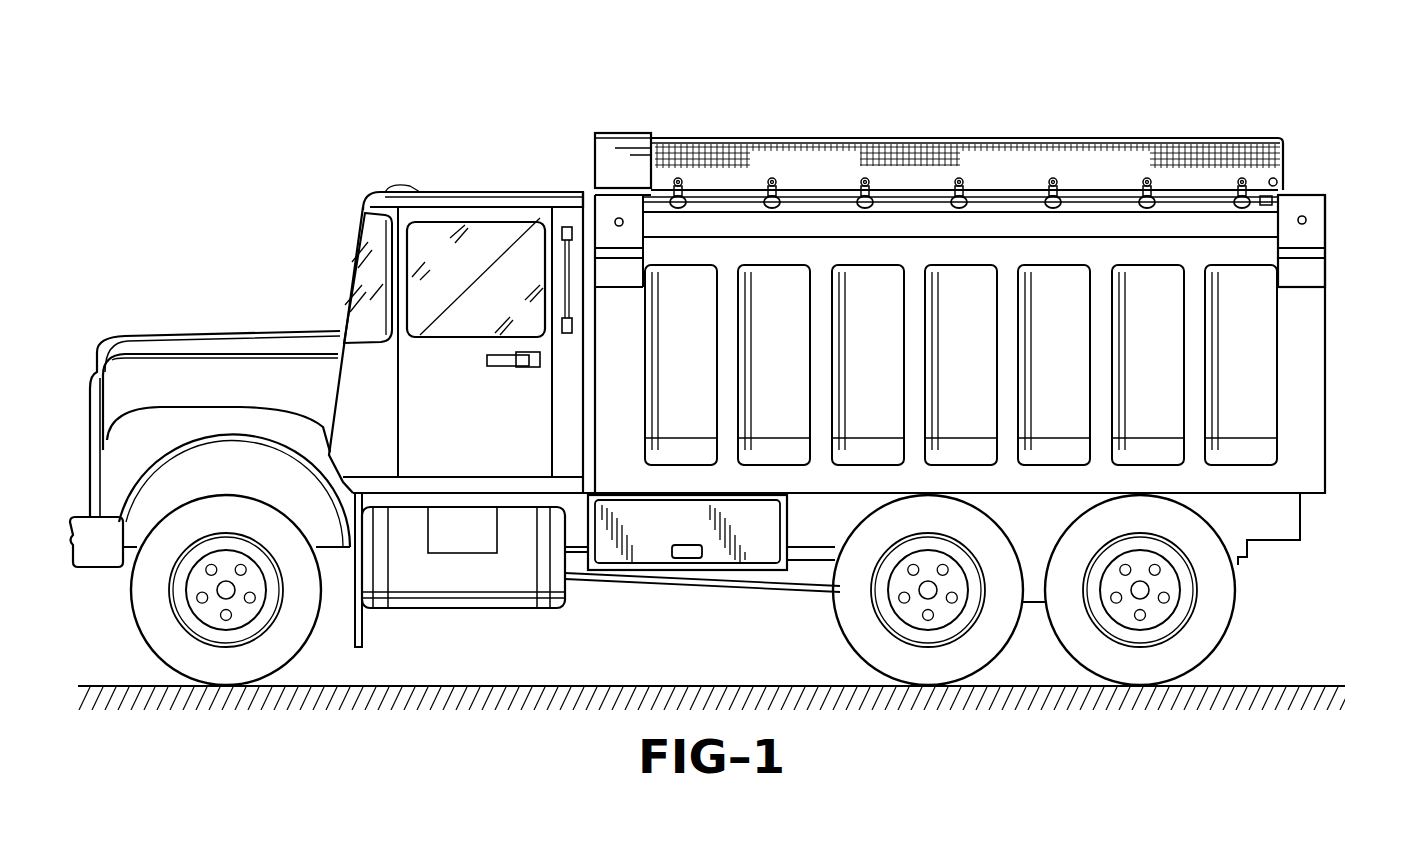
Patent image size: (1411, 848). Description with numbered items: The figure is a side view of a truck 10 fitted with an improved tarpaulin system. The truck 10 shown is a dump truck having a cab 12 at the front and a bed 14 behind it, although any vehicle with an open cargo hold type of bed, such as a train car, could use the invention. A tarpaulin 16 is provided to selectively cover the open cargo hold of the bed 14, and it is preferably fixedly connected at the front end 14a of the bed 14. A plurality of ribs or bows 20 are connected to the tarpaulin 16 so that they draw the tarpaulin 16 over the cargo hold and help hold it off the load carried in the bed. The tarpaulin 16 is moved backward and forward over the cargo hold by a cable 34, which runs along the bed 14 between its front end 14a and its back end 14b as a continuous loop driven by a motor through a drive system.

The truck 10 is at (1143, 72).
The cab 12 is at (471, 184).
The bed 14 is at (1266, 364).
The front end of bed 14a is at (623, 132).
The back end of bed 14b is at (1312, 307).
The tarpaulin 16 is at (1203, 147).
The ribs or bows 20 is at (784, 187).
The cable 34 is at (725, 200).